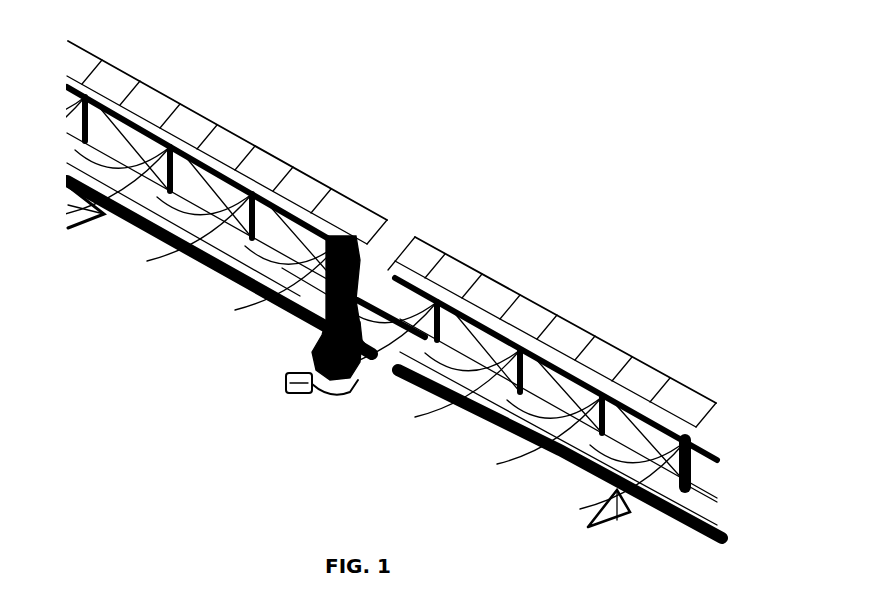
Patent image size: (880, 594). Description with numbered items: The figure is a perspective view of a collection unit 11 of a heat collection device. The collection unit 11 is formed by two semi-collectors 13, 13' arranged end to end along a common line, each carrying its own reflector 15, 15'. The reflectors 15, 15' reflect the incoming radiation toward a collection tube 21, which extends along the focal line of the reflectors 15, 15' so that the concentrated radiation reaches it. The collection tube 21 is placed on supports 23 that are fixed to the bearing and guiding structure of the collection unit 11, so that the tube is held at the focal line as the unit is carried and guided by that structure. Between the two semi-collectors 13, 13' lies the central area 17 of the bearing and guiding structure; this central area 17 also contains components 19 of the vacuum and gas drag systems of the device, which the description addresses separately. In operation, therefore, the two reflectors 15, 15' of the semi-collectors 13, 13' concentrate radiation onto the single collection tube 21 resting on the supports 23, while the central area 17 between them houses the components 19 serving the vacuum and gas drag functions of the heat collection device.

The collection unit 11 is at (172, 412).
The semi-collector 13 is at (219, 220).
The semi-collector 13' is at (539, 408).
The reflector 15 is at (193, 175).
The reflector 15' is at (524, 373).
The central area 17 is at (357, 378).
The components of the vacuum and gas drag systems 19 is at (293, 393).
The collection tube 21 is at (310, 227).
The supports 23 is at (183, 153).